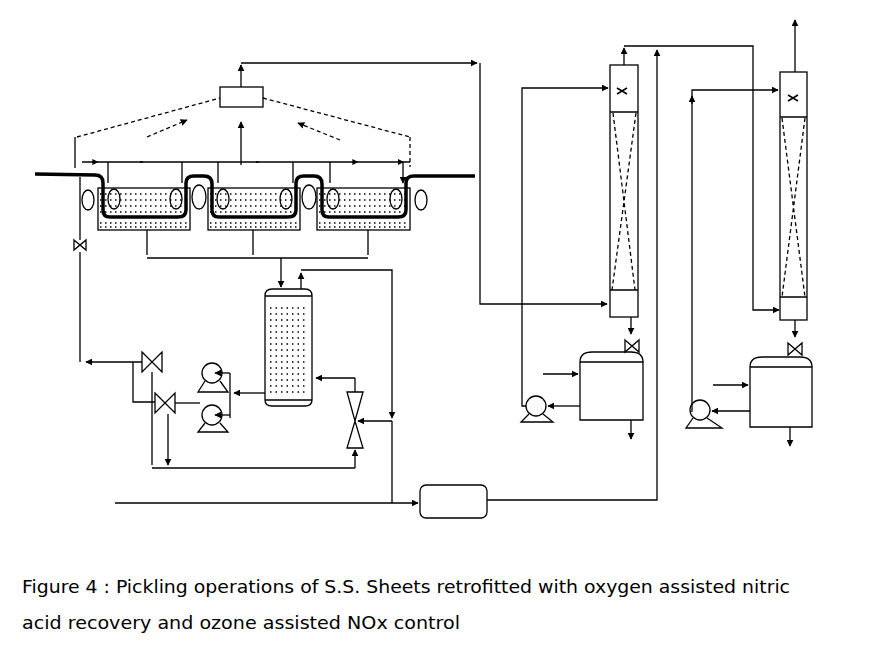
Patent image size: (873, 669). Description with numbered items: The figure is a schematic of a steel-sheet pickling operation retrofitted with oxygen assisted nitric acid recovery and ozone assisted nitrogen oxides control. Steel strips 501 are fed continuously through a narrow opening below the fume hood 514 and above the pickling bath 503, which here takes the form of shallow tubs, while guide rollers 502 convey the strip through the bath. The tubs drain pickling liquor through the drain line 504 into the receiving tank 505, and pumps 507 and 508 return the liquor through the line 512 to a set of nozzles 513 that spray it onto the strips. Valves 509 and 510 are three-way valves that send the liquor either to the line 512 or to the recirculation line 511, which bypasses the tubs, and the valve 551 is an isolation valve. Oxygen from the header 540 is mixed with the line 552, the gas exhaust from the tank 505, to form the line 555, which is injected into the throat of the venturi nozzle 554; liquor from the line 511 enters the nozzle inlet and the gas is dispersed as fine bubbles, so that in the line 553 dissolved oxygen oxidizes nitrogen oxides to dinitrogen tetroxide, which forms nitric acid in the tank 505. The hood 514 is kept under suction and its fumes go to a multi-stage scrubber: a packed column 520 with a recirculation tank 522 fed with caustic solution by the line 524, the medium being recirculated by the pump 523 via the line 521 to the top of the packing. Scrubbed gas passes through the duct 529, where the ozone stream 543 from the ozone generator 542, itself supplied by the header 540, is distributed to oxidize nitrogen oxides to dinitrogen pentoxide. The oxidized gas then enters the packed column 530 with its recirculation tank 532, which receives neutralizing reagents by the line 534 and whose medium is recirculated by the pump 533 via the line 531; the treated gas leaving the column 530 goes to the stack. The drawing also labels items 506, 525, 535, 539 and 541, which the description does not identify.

The steel strips 501 is at (50, 170).
The guide rollers 502 is at (76, 224).
The pickling bath 503 is at (112, 233).
The drain line 504 is at (203, 259).
The receiving tank 505 is at (265, 327).
The acid recirculation line 506 is at (245, 396).
The pump 507 is at (210, 362).
The pump 508 is at (205, 432).
The three way valve 509 is at (152, 351).
The three way valve 510 is at (338, 64).
The recirculation line 511 is at (203, 470).
The line 512 is at (83, 292).
The set of nozzles 513 is at (287, 175).
The fume hood 514 is at (182, 102).
The packed column 520 is at (617, 187).
The line 521 is at (524, 120).
The recirculation tank 522 is at (598, 366).
The pump 523 is at (531, 423).
The line 524 is at (555, 370).
The recovered acid outlet 525 is at (627, 431).
The duct 529 is at (695, 47).
The packed column 530 is at (805, 187).
The line 531 is at (697, 147).
The recirculation tank 532 is at (812, 400).
The pump 533 is at (718, 424).
The line 534 is at (726, 380).
The scrubber liquid outlet 535 is at (794, 448).
The treated gas vent 539 is at (793, 53).
The header 540 is at (128, 500).
The gas bypass line 541 is at (387, 462).
The ozone generator 542 is at (457, 498).
The ozone stream 543 is at (655, 100).
The isolation valve 551 is at (77, 260).
The line 552 is at (393, 287).
The line 553 is at (327, 377).
The venturi nozzle 554 is at (349, 407).
The line 555 is at (386, 418).